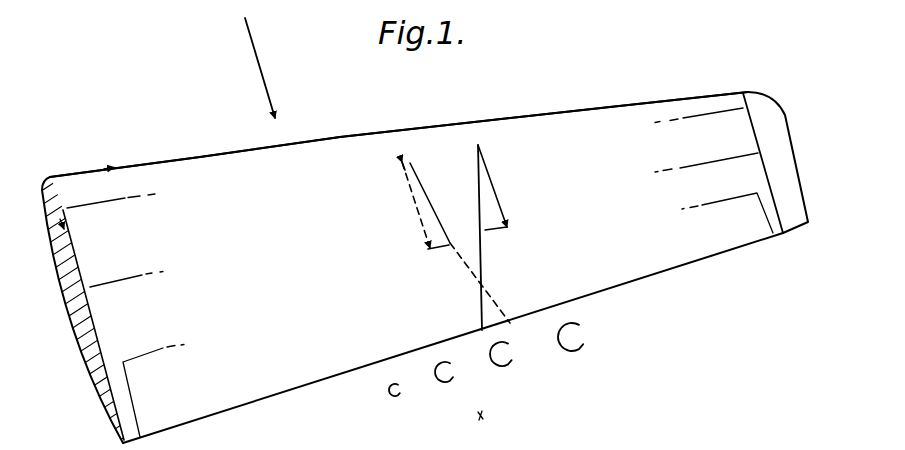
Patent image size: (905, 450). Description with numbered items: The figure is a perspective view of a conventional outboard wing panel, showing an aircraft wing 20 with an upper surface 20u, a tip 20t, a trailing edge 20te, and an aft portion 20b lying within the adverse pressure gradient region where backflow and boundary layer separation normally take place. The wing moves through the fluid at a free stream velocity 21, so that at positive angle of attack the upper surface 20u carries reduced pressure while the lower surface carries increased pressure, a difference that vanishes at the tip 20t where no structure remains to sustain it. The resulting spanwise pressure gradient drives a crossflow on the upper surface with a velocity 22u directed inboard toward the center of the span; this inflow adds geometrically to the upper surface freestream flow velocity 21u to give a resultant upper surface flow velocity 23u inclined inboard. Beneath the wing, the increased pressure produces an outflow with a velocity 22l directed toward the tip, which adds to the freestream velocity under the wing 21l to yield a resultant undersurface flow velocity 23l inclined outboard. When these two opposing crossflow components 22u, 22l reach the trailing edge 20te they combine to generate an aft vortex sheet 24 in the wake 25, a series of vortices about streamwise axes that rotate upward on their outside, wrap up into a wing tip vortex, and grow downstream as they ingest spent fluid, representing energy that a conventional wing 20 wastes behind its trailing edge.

The aircraft wing 20 is at (548, 110).
The upper surface 20u is at (293, 288).
The trailing edge 20te is at (230, 412).
The tip 20t is at (772, 98).
The aft portion 20b is at (663, 247).
The velocity 21 is at (252, 30).
The upper surface freestream flow velocity 21u is at (497, 192).
The freestream velocity under the wing 21l is at (422, 230).
The upper surface crossflow velocity 22u is at (487, 233).
The lower surface crossflow velocity 22l is at (440, 250).
The resultant upper surface flow velocity 23u is at (478, 173).
The resultant undersurface flow velocity 23l is at (430, 210).
The aft vortex sheet 24 is at (582, 347).
The wake 25 is at (480, 415).